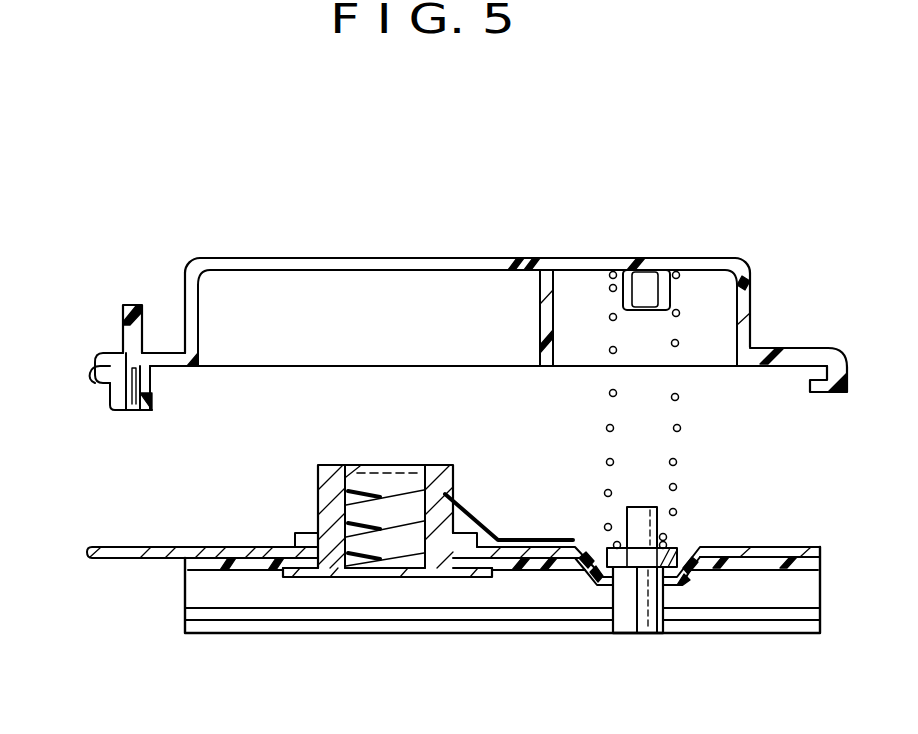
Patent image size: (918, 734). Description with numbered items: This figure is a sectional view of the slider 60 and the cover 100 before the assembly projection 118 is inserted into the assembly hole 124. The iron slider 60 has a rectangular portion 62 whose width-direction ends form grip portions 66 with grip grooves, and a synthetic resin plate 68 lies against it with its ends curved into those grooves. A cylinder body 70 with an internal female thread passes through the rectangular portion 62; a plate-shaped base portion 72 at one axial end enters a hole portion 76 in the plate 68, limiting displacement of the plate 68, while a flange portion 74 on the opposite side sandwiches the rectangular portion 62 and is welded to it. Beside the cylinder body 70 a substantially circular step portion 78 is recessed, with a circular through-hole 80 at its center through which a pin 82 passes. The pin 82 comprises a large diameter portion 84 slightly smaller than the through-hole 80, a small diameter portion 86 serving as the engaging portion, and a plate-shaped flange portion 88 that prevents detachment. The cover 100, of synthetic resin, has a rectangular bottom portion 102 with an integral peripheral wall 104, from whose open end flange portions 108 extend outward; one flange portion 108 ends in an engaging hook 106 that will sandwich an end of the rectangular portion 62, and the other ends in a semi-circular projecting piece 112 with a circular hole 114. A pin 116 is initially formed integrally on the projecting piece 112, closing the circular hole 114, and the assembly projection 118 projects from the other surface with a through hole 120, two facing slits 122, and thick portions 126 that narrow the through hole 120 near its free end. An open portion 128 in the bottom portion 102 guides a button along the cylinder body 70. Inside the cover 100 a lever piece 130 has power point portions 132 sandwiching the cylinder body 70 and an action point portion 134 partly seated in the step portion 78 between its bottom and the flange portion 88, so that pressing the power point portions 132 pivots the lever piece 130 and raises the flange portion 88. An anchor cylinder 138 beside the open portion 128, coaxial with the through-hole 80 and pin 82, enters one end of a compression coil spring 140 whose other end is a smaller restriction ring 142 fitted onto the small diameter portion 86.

The slider 60 is at (818, 530).
The rectangular portion 62 is at (177, 547).
The grip portion 66 is at (215, 636).
The plate 68 is at (242, 573).
The cylinder body 70 is at (318, 525).
The base portion 72 is at (315, 580).
The flange portion 74 is at (293, 535).
The hole portion 76 is at (470, 578).
The step portion 78 is at (698, 548).
The through-hole 80 is at (633, 562).
The pin 82 is at (656, 645).
The large diameter portion 84 is at (672, 595).
The small diameter portion 86 is at (630, 507).
The flange portion 88 is at (620, 585).
The cover 100 is at (752, 268).
The bottom portion 102 is at (265, 259).
The peripheral wall 104 is at (186, 312).
The engaging hook 106 is at (803, 393).
The flange portion 108 is at (163, 352).
The projecting piece 112 is at (101, 366).
The circular hole 114 is at (128, 352).
The pin 116 is at (132, 302).
The assembly projection 118 is at (107, 382).
The through hole 120 is at (137, 373).
The slit 122 is at (116, 405).
The assembly hole 124 is at (117, 545).
The thick portion 126 is at (137, 417).
The open portion 128 is at (507, 262).
The lever piece 130 is at (493, 505).
The power point portion 132 is at (445, 495).
The action point portion 134 is at (580, 540).
The anchor cylinder 138 is at (670, 297).
The compression coil spring 140 is at (682, 428).
The restriction ring 142 is at (677, 547).